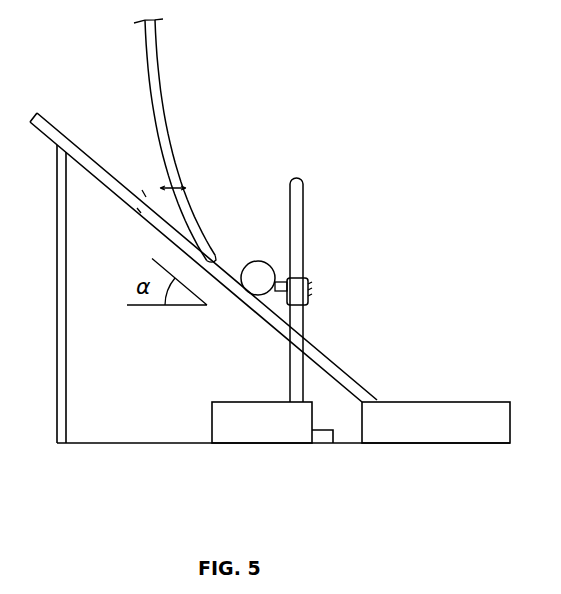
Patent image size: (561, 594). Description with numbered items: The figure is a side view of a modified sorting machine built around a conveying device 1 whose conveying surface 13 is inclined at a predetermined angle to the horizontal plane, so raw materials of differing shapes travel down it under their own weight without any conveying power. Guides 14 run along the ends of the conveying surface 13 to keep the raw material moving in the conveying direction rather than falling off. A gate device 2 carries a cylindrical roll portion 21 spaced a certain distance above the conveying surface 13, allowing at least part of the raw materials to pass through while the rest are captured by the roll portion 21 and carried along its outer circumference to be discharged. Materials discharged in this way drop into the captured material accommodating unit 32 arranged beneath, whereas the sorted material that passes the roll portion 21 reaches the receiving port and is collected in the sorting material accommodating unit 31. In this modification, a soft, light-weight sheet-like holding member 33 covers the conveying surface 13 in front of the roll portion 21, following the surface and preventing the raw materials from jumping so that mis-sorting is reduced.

The conveying device 1 is at (270, 242).
The guides 14 is at (38, 111).
The holding member 33 is at (162, 88).
The conveying surface 13 is at (191, 174).
The gate device 2 is at (296, 217).
The roll portion 21 is at (255, 273).
The captured material accommodating unit 32 is at (277, 427).
The sorting material accommodating unit 31 is at (445, 427).